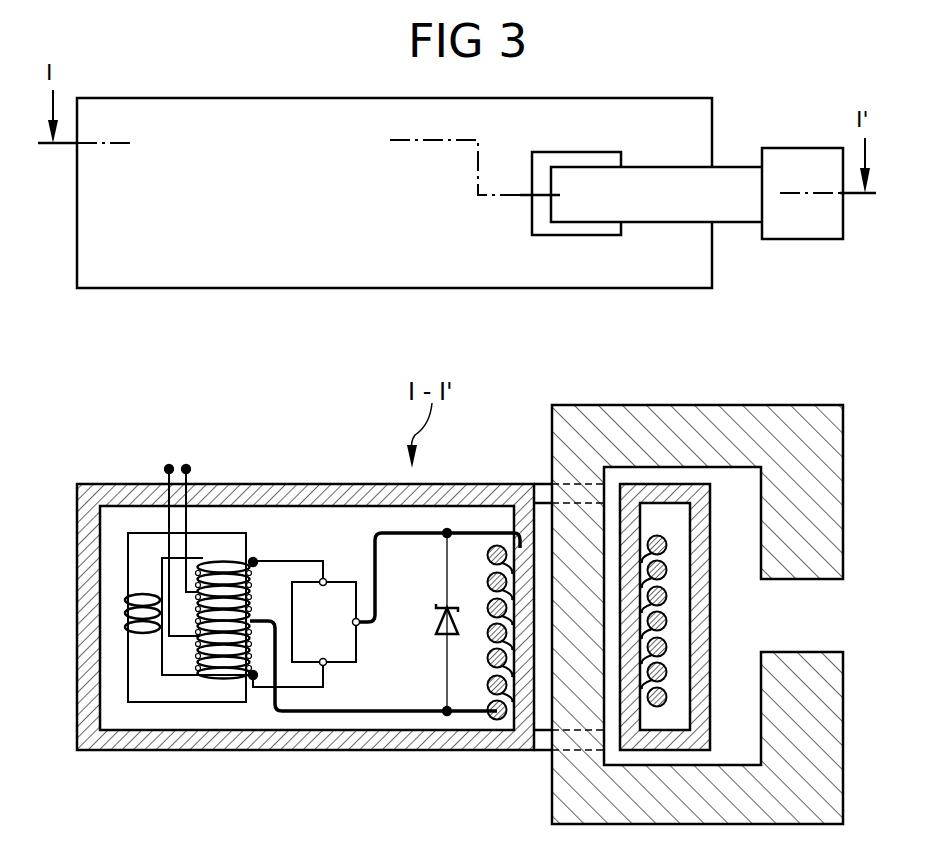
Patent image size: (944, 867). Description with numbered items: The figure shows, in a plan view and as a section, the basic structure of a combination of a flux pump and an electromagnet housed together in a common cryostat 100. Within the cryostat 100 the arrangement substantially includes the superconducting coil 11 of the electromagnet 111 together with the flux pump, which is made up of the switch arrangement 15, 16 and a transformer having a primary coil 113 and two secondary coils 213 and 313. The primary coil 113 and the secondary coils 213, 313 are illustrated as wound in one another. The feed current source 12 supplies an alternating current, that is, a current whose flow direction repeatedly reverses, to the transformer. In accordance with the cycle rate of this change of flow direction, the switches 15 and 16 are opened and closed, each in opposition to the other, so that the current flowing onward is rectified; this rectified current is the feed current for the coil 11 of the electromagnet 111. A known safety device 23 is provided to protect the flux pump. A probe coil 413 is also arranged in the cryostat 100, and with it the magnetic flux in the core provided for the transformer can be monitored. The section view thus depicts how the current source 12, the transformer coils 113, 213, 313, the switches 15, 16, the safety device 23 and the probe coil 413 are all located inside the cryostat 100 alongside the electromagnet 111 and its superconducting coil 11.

The cryostat 100 is at (140, 278).
The electromagnet 111 is at (735, 212).
The superconducting coil 11 is at (692, 624).
The feed current source 12 is at (177, 460).
The primary coil 113 is at (226, 540).
The secondary coil 213 is at (225, 620).
The secondary coil 313 is at (225, 620).
The switch 15 is at (333, 580).
The switch 16 is at (324, 622).
The safety device 23 is at (434, 625).
The probe coil 413 is at (140, 640).